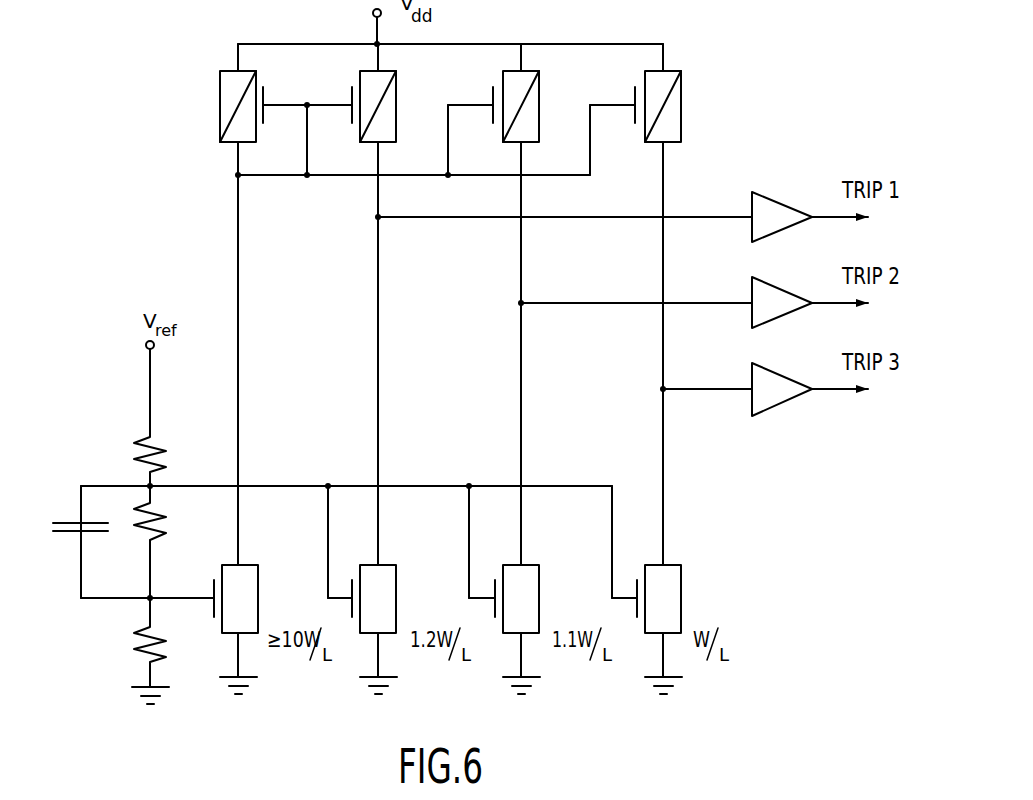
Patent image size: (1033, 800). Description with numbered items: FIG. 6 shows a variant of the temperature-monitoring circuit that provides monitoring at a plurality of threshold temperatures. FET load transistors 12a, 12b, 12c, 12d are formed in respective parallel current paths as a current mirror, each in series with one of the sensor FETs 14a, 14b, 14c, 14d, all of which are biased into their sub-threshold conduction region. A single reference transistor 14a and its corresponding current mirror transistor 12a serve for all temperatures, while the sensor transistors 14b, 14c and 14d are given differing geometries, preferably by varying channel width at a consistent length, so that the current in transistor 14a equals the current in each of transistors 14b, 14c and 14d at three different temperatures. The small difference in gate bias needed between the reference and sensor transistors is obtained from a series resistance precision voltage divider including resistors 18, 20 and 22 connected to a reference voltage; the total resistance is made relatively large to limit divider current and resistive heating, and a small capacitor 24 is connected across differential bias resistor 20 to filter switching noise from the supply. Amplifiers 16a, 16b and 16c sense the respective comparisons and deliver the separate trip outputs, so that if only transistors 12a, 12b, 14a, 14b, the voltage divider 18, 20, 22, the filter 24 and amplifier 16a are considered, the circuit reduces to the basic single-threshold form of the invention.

The FET load transistor 12a is at (257, 84).
The FET load transistor 12b is at (682, 84).
The current mirror load transistor 12c is at (540, 84).
The current mirror load transistor 12d is at (397, 84).
The reference sensor FET 14a is at (258, 575).
The sensor FET 14b is at (682, 575).
The sensor FET 14c is at (540, 575).
The sensor FET 14d is at (397, 575).
The amplifier 16a is at (773, 371).
The amplifier 16b is at (773, 284).
The amplifier 16c is at (773, 198).
The resistor 18 is at (164, 443).
The differential bias resistor 20 is at (163, 525).
The resistor 22 is at (148, 650).
The capacitor 24 is at (93, 533).